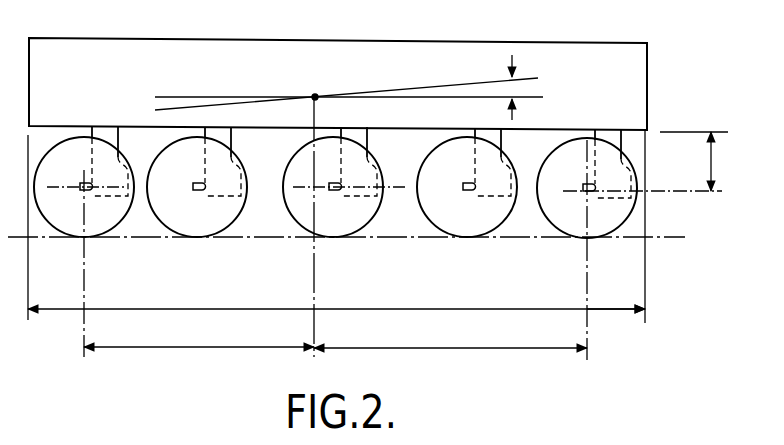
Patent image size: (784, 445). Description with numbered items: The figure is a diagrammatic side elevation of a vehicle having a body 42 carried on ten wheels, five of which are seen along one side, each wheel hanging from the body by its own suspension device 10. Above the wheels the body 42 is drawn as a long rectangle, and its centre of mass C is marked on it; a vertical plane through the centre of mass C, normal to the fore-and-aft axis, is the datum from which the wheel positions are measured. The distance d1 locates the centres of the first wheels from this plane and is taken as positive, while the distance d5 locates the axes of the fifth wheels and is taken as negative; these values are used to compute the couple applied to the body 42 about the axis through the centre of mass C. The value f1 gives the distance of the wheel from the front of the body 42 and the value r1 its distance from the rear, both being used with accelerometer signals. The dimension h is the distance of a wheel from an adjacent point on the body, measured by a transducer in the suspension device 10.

The vehicle body 42 is at (435, 62).
The suspension device 10 is at (608, 137).
The centre of mass C is at (349, 90).
The distance from rear r1 is at (336, 297).
The distance from front f1 is at (616, 300).
The distance of fifth wheel axes d5 is at (199, 337).
The distance of first wheel centres d1 is at (450, 337).
The distance of wheel from body h is at (646, 161).